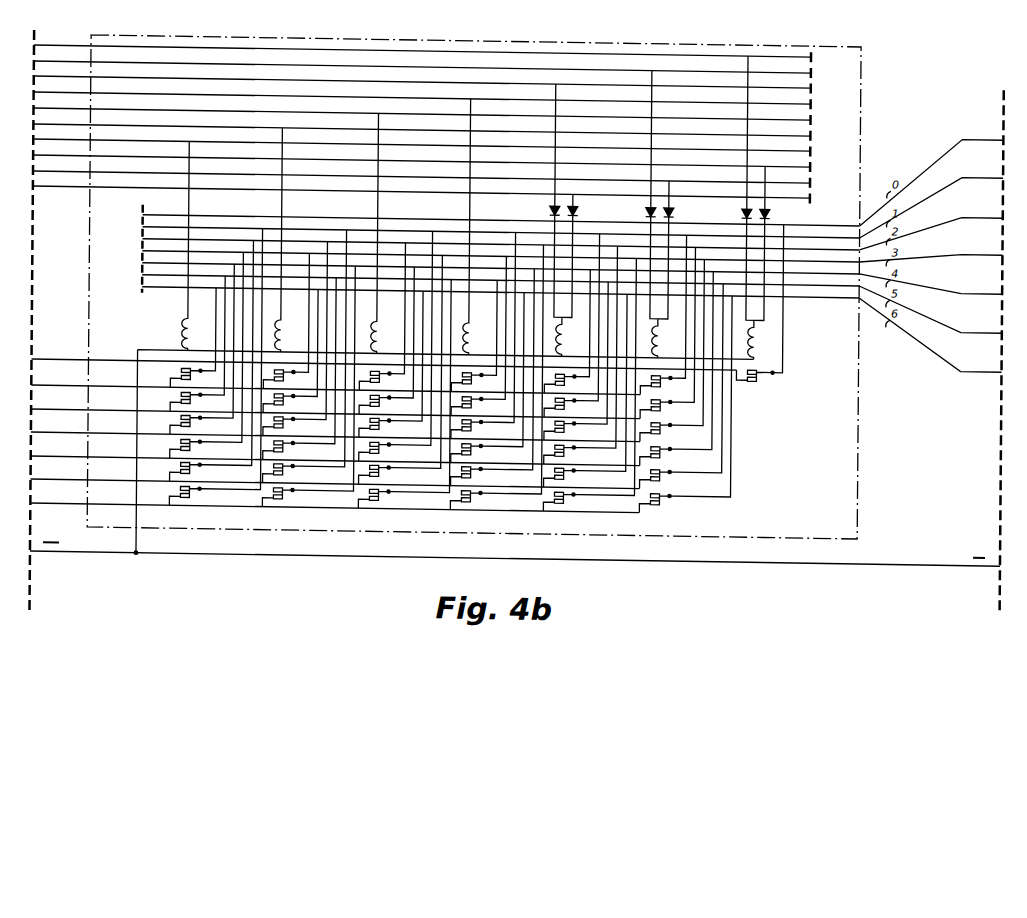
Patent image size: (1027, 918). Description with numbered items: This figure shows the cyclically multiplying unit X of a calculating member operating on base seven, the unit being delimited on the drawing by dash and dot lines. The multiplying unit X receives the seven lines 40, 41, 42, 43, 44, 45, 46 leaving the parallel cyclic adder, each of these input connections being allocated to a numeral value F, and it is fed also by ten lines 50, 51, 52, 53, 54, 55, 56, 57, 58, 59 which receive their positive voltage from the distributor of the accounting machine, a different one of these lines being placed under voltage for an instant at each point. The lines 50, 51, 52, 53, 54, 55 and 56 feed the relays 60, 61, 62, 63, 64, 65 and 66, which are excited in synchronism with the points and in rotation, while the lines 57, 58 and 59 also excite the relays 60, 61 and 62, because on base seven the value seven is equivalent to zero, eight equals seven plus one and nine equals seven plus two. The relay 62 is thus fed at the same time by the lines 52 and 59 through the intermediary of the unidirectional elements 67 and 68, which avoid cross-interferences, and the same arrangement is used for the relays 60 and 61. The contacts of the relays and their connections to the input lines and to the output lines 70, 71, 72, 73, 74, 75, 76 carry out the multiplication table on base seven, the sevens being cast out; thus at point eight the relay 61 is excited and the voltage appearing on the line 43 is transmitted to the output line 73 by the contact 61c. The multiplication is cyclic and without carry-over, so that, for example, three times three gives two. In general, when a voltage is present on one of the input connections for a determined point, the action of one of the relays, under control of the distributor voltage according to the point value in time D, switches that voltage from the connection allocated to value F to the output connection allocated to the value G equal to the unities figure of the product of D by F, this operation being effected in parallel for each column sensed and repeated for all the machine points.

The input line 40 is at (932, 175).
The input line 41 is at (932, 200).
The input line 42 is at (930, 226).
The input line 43 is at (930, 250).
The input line 44 is at (930, 284).
The input line 45 is at (930, 309).
The input line 46 is at (931, 335).
The distributor line 50 is at (40, 45).
The distributor line 51 is at (40, 61).
The distributor line 52 is at (40, 76).
The distributor line 53 is at (40, 92).
The distributor line 54 is at (40, 108).
The distributor line 55 is at (40, 124).
The distributor line 56 is at (40, 139).
The distributor line 57 is at (40, 155).
The distributor line 58 is at (40, 171).
The distributor line 59 is at (40, 186).
The relay 60 is at (757, 318).
The relay 61 is at (661, 318).
The relay contact 61c is at (664, 424).
The relay 62 is at (565, 318).
The relay 63 is at (472, 318).
The relay 64 is at (380, 318).
The relay 65 is at (284, 318).
The relay 66 is at (191, 318).
The unidirectional element 67 is at (551, 203).
The unidirectional element 68 is at (579, 203).
The output line 70 is at (383, 358).
The output line 71 is at (335, 383).
The output line 72 is at (335, 407).
The output line 73 is at (335, 430).
The output line 74 is at (335, 454).
The output line 75 is at (335, 477).
The output line 76 is at (334, 501).
The cyclically multiplying unit X is at (861, 465).